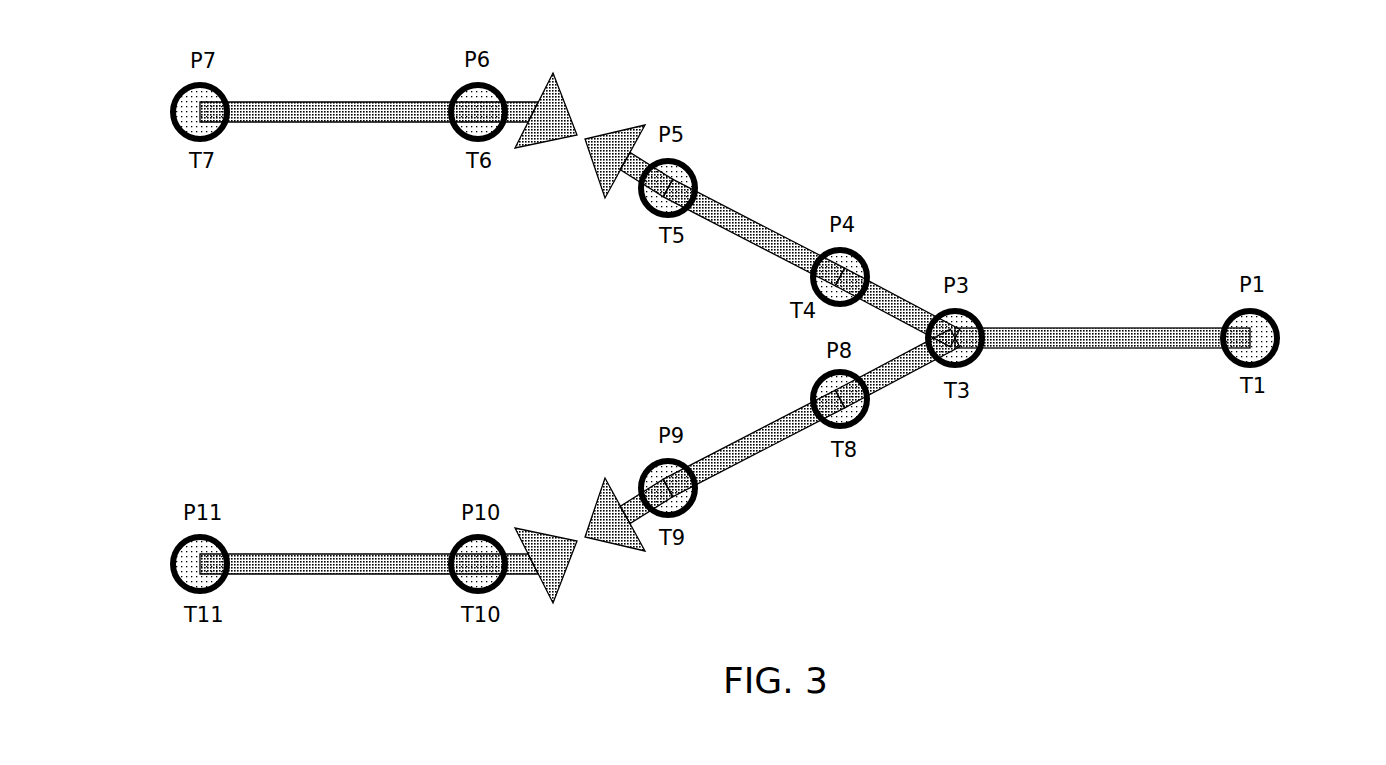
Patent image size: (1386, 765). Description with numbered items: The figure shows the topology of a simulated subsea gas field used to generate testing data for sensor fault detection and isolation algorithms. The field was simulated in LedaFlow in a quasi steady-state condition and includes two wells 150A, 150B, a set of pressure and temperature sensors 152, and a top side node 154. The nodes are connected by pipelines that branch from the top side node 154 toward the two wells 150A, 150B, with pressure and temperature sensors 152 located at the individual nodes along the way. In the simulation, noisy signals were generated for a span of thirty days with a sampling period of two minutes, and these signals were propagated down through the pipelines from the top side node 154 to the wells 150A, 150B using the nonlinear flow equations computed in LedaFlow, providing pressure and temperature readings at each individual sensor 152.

The well 150A is at (176, 90).
The well 150B is at (176, 548).
The pressure and temperature sensor 152 is at (227, 93).
The top side node 154 is at (1281, 338).